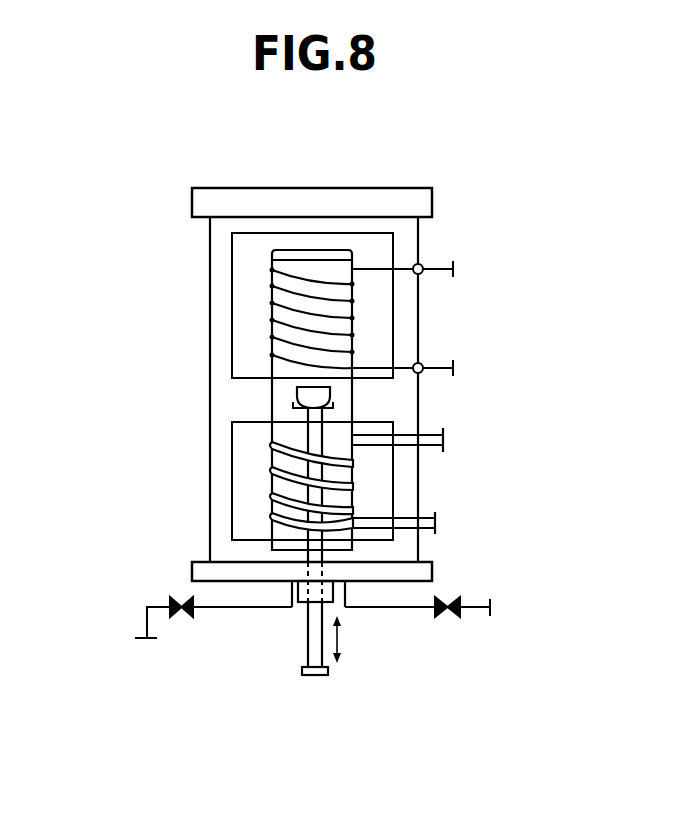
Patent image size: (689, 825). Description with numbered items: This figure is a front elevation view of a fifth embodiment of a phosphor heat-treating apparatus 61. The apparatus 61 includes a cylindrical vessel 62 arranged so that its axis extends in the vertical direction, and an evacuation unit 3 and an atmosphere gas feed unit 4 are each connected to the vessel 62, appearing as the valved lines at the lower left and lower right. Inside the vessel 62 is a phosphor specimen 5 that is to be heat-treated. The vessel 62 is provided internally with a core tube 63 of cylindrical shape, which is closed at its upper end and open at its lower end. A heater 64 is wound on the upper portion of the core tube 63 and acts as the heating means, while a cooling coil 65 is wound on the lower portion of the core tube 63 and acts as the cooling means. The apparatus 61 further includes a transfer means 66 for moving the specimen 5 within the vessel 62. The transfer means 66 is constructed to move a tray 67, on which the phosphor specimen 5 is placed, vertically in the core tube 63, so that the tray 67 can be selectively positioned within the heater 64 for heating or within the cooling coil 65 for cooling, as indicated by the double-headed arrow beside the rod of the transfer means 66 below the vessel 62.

The phosphor heat-treating apparatus 61 is at (186, 287).
The cylindrical vessel 62 is at (420, 317).
The core tube 63 is at (270, 393).
The heater 64 is at (329, 284).
The cooling coil 65 is at (355, 470).
The phosphor specimen 5 is at (424, 399).
The tray 67 is at (333, 399).
The transfer means 66 is at (308, 650).
The evacuation unit 3 is at (176, 597).
The atmosphere gas feed unit 4 is at (461, 598).